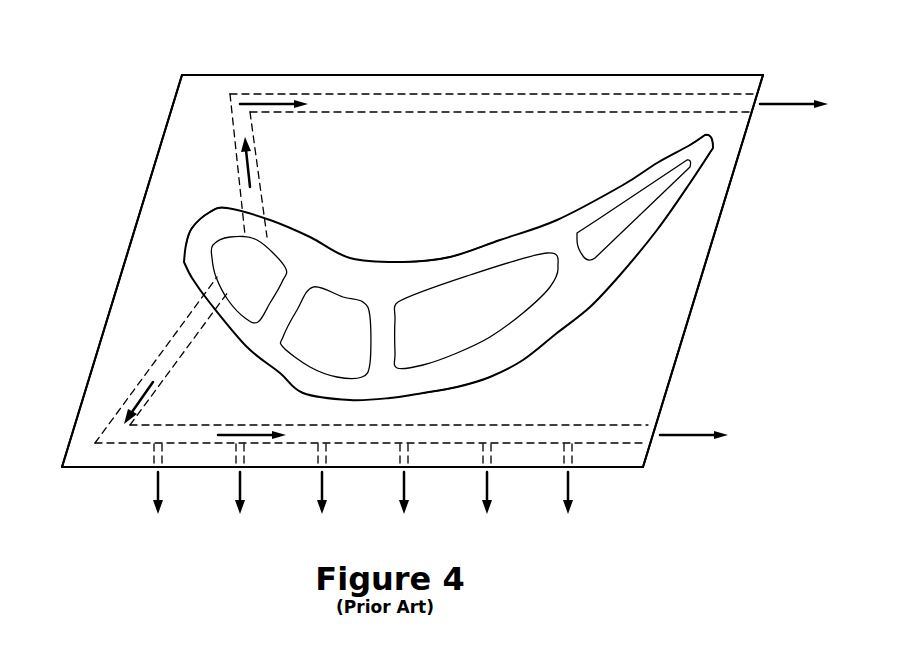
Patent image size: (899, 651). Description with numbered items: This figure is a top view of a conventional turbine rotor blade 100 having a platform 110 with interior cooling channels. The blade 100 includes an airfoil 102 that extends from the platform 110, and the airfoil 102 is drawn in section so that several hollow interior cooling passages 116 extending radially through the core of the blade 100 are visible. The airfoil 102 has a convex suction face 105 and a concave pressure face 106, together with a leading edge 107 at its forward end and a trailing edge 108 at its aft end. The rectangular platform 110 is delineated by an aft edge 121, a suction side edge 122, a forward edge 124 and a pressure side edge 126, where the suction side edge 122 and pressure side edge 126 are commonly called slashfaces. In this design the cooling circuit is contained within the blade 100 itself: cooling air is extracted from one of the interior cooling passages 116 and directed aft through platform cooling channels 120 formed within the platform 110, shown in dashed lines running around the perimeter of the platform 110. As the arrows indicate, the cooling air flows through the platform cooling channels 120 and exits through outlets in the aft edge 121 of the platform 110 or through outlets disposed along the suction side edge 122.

The turbine rotor blade 100 is at (85, 74).
The airfoil 102 is at (152, 236).
The suction face 105 is at (445, 383).
The pressure face 106 is at (456, 256).
The leading edge 107 is at (192, 218).
The trailing edge 108 is at (710, 133).
The platform 110 is at (121, 326).
The interior cooling passages 116 is at (229, 286).
The platform cooling channels 120 is at (355, 93).
The aft edge 121 is at (690, 315).
The suction side edge 122 is at (100, 470).
The forward edge 124 is at (113, 296).
The pressure side edge 126 is at (665, 75).